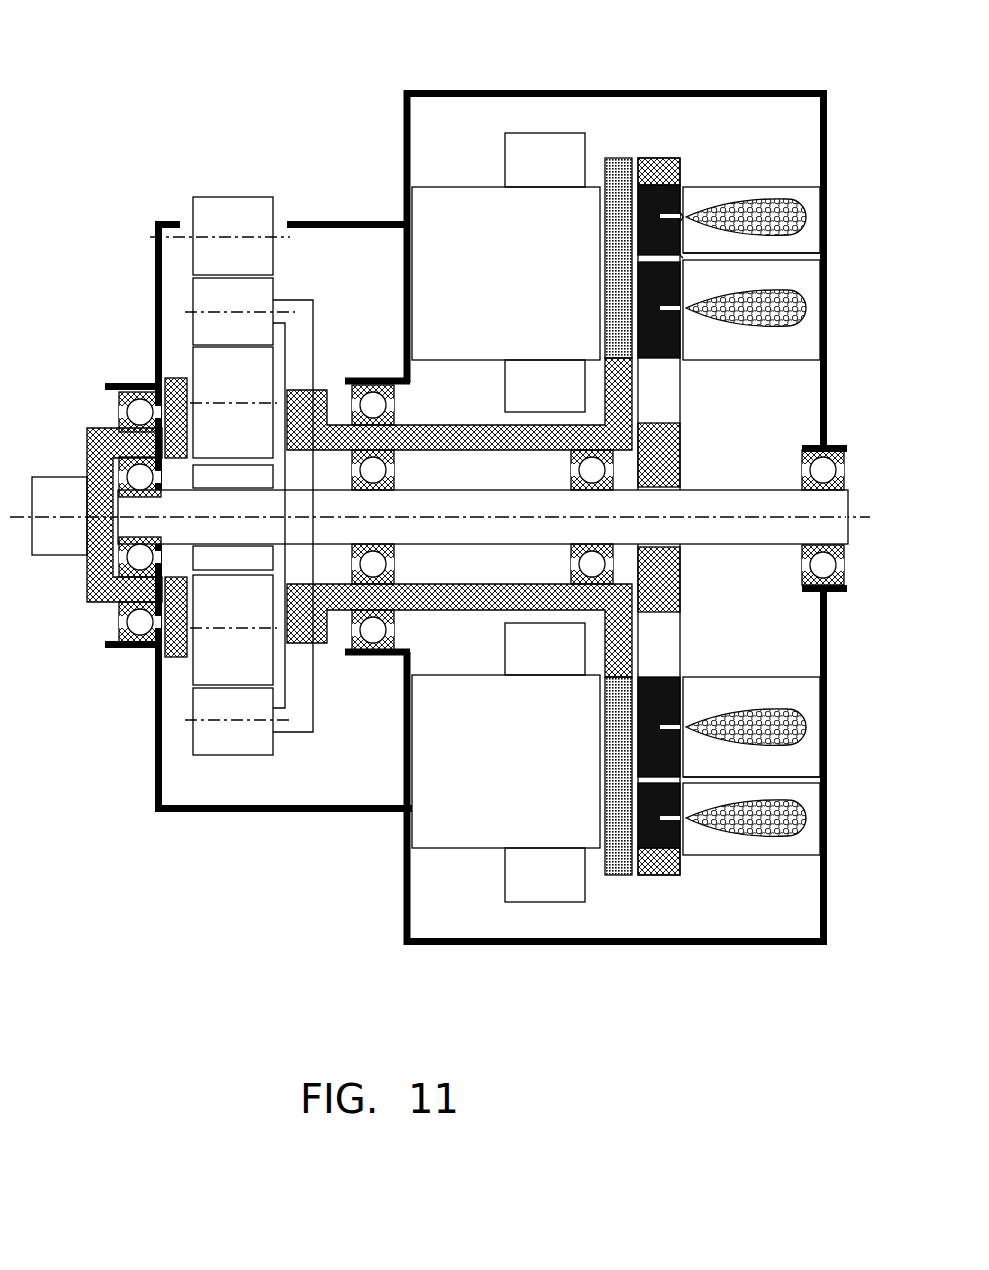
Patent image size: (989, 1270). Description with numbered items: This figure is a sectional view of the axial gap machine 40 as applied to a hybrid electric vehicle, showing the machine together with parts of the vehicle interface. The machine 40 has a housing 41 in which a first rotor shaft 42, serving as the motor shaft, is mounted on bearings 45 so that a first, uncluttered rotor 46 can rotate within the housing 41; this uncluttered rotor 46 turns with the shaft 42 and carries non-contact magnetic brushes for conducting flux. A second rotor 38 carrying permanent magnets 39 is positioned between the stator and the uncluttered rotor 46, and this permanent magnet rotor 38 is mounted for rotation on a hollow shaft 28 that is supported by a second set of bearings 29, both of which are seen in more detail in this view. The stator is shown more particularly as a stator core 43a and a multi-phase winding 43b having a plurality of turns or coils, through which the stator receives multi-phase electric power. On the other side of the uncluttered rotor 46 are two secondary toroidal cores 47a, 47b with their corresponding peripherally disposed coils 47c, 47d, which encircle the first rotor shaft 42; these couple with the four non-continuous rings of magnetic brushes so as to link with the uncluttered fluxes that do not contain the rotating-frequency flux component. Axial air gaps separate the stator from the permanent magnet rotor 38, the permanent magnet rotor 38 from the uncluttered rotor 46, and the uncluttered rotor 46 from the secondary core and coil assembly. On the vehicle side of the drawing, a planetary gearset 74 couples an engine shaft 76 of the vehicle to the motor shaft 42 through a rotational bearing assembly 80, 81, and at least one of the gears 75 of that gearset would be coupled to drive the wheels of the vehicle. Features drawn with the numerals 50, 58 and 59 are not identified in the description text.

The hollow shaft 28 is at (500, 425).
The bearings 29 is at (570, 483).
The second rotor 38 is at (535, 471).
The permanent magnets 39 is at (600, 265).
The machine 40 is at (708, 68).
The housing 41 is at (593, 90).
The first rotor shaft 42 is at (765, 490).
The stator core 43a is at (462, 218).
The multi-phase winding 43b is at (563, 158).
The bearings 45 is at (805, 458).
The first rotor 46 is at (692, 517).
The secondary toroidal core 47a is at (730, 190).
The secondary toroidal core 47b is at (768, 352).
The peripherally disposed coil 47c is at (748, 523).
The peripherally disposed coil 47d is at (715, 352).
The permanent magnet 50 is at (679, 198).
The magnet gap 58 is at (672, 258).
The magnet pole face 59 is at (682, 220).
The planetary gearset 74 is at (242, 326).
The gear 75 is at (235, 755).
The engine shaft 76 is at (48, 477).
The rotational bearing assembly 80 is at (118, 650).
The rotational bearing assembly 81 is at (90, 605).